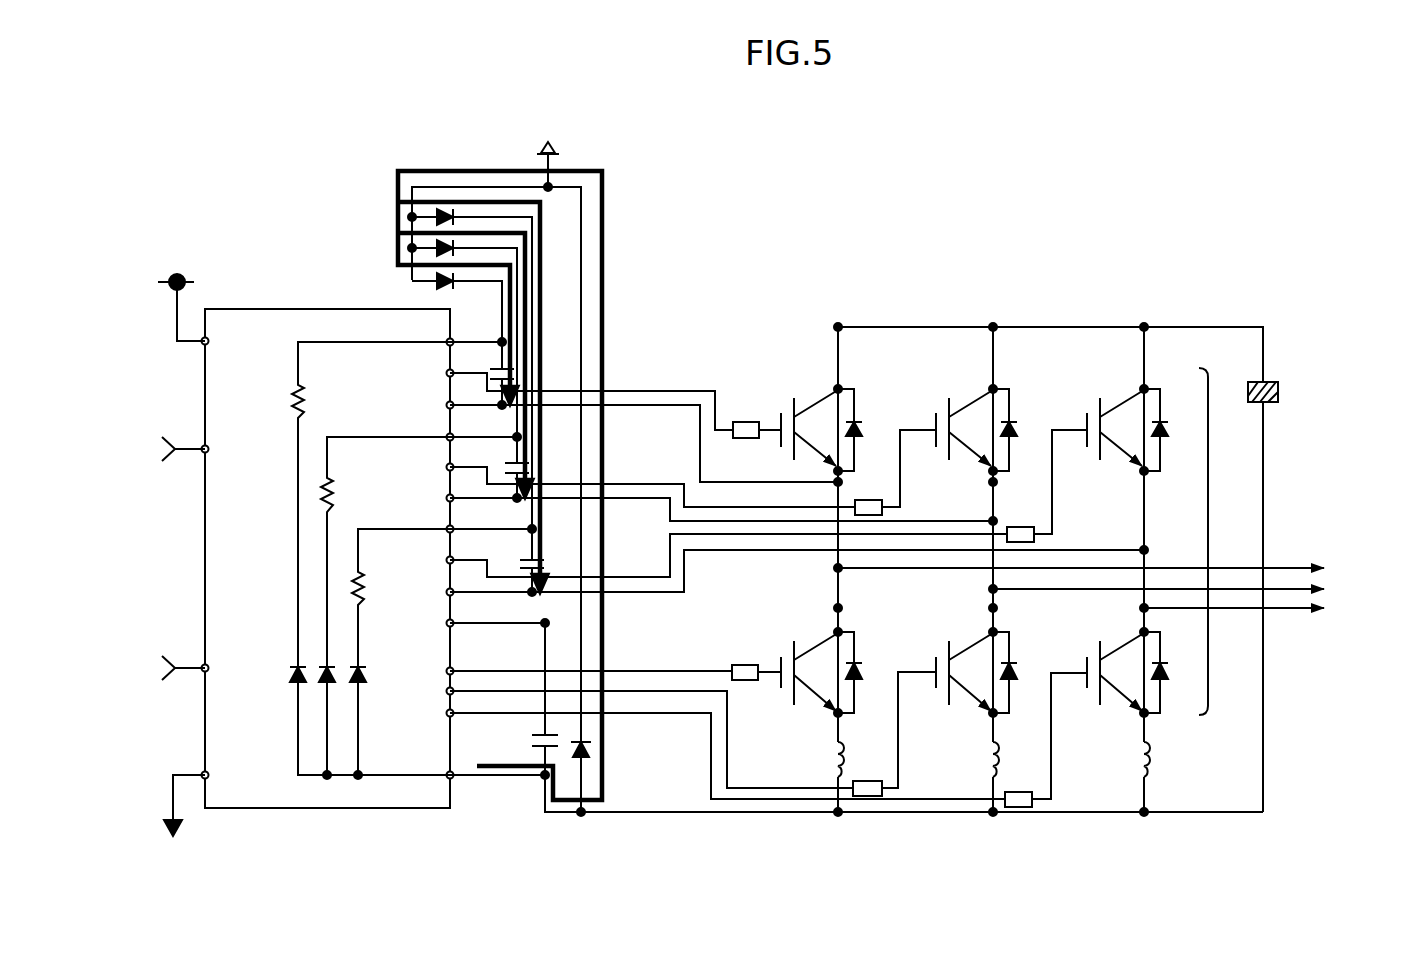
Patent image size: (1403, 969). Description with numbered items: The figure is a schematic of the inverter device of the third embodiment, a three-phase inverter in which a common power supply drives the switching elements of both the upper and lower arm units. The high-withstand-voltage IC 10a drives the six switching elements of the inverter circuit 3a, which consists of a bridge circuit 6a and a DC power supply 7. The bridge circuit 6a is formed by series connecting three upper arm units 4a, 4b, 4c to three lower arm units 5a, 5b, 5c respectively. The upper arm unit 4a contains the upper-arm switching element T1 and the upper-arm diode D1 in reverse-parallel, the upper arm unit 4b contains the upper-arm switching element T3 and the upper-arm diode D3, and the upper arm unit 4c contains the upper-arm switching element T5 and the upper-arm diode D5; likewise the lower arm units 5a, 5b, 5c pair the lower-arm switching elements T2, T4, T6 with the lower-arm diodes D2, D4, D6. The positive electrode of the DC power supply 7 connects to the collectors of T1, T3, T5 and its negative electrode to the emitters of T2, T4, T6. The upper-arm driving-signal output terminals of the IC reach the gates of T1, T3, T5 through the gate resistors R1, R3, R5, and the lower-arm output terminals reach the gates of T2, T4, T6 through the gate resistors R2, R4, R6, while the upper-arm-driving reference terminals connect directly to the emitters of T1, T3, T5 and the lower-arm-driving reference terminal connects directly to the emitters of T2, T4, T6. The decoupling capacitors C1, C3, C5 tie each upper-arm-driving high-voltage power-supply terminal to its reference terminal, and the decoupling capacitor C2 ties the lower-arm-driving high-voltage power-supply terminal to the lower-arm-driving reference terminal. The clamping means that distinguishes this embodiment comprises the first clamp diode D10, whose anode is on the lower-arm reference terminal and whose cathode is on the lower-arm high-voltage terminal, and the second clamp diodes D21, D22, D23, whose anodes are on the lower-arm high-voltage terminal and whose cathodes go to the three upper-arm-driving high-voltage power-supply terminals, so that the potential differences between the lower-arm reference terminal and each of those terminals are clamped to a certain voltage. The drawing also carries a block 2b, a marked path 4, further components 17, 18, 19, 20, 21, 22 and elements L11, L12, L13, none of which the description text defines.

The bootstrap diode circuit 2b is at (454, 449).
The inverter circuit 3a is at (1031, 275).
The through current path 4 is at (530, 521).
The upper arm unit 4a is at (818, 374).
The upper arm unit 4b is at (973, 374).
The upper arm unit 4c is at (1119, 374).
The lower arm unit 5a is at (797, 734).
The lower arm unit 5b is at (945, 736).
The lower arm unit 5c is at (1098, 736).
The bridge circuit 6a is at (1208, 530).
The DC power supply 7 is at (1280, 390).
The high-withstand-voltage IC 10a is at (382, 811).
The protection diode 17 is at (290, 679).
The protection diode 18 is at (320, 680).
The protection diode 19 is at (365, 680).
The resistor 20 is at (293, 396).
The resistor 21 is at (322, 489).
The resistor 22 is at (352, 583).
The second clamp diode D21 is at (410, 280).
The second clamp diode D22 is at (410, 247).
The second clamp diode D23 is at (410, 215).
The decoupling capacitor C1 is at (500, 366).
The decoupling capacitor C3 is at (517, 462).
The decoupling capacitor C5 is at (530, 558).
The decoupling capacitor C2 is at (530, 735).
The first clamp diode D10 is at (591, 747).
The upper-arm switching element T1 is at (793, 398).
The lower-arm switching element T2 is at (792, 643).
The upper-arm switching element T3 is at (951, 398).
The lower-arm switching element T4 is at (950, 643).
The upper-arm switching element T5 is at (1098, 398).
The lower-arm switching element T6 is at (1097, 643).
The upper-arm diode D1 is at (857, 412).
The lower-arm diode D2 is at (857, 657).
The upper-arm diode D3 is at (1012, 412).
The lower-arm diode D4 is at (1012, 657).
The upper-arm diode D5 is at (1164, 412).
The lower-arm diode D6 is at (1164, 657).
The gate resistor R1 is at (745, 422).
The gate resistor R2 is at (745, 665).
The gate resistor R3 is at (870, 500).
The gate resistor R4 is at (873, 781).
The gate resistor R5 is at (1022, 527).
The gate resistor R6 is at (1022, 800).
The emitter inductance L11 is at (833, 768).
The emitter inductance L12 is at (987, 768).
The emitter inductance L13 is at (1130, 768).